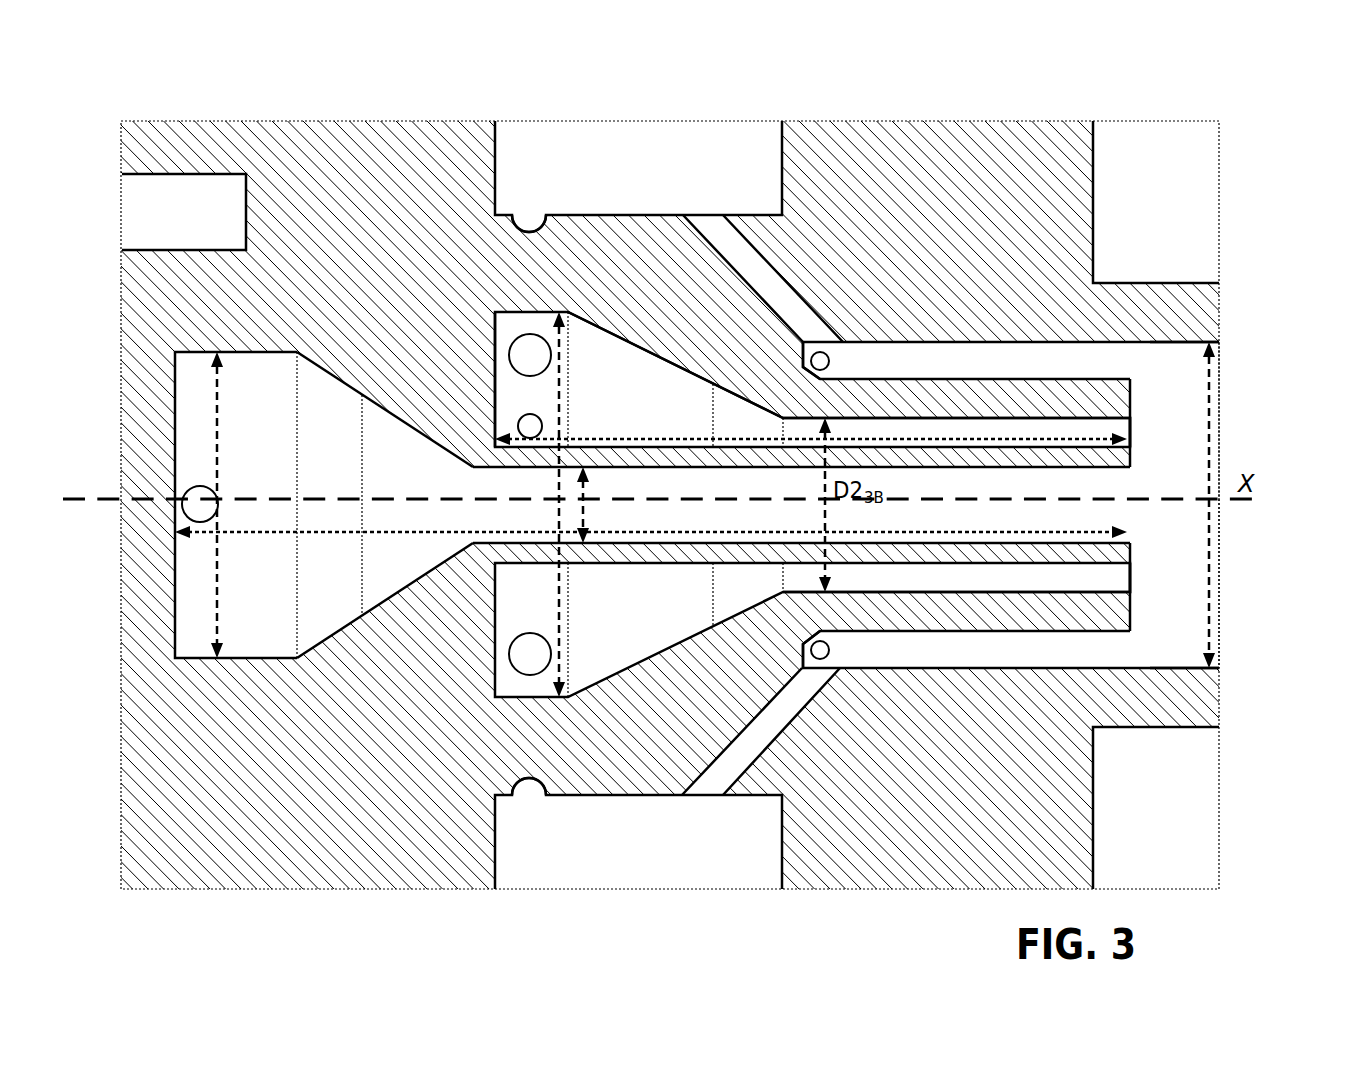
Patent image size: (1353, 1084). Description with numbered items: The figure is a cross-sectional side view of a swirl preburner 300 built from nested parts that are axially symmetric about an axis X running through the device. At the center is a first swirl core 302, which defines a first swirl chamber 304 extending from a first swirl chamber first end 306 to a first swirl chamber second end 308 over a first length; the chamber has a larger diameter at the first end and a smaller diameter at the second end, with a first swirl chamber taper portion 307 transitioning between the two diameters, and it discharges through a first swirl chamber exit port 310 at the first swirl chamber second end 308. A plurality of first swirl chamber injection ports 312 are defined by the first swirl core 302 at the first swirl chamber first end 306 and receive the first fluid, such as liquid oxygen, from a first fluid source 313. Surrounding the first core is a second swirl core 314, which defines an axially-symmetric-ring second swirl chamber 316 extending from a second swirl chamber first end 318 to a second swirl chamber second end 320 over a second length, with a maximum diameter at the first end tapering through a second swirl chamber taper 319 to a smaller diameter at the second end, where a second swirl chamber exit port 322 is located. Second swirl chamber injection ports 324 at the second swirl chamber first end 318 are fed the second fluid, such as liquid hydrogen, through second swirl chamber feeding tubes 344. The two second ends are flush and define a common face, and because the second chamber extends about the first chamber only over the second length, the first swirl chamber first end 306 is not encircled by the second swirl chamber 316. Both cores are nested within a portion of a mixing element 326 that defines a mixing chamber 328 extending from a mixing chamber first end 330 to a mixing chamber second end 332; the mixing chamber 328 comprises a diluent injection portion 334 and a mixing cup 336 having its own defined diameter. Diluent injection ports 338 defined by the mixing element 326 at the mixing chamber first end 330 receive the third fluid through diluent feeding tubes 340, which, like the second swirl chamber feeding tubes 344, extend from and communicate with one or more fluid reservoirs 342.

The swirl preburner 300 is at (1120, 95).
The first swirl core 302 is at (182, 662).
The first swirl chamber 304 is at (328, 632).
The first swirl chamber first end 306 is at (173, 585).
The first swirl chamber taper portion 307 is at (352, 380).
The first swirl chamber second end 308 is at (1133, 485).
The first swirl chamber exit port 310 is at (1102, 514).
The first swirl chamber injection ports 312 is at (173, 486).
The first fluid source 313 is at (247, 213).
The second swirl core 314 is at (496, 700).
The second swirl chamber 316 is at (612, 348).
The second swirl chamber first end 318 is at (492, 335).
The second swirl chamber taper 319 is at (643, 348).
The second swirl chamber second end 320 is at (1133, 430).
The second swirl chamber exit port 322 is at (1115, 578).
The second swirl chamber injection ports 324 is at (510, 311).
The mixing element 326 is at (953, 341).
The mixing chamber 328 is at (1260, 357).
The mixing chamber first end 330 is at (802, 343).
The mixing chamber second end 332 is at (1252, 645).
The diluent injection portion 334 is at (1026, 352).
The mixing cup 336 is at (1171, 362).
The diluent injection ports 338 is at (826, 353).
The diluent feeding tubes 340 is at (781, 277).
The fluid reservoirs 342 is at (783, 863).
The second swirl chamber feeding tubes 344 is at (512, 229).